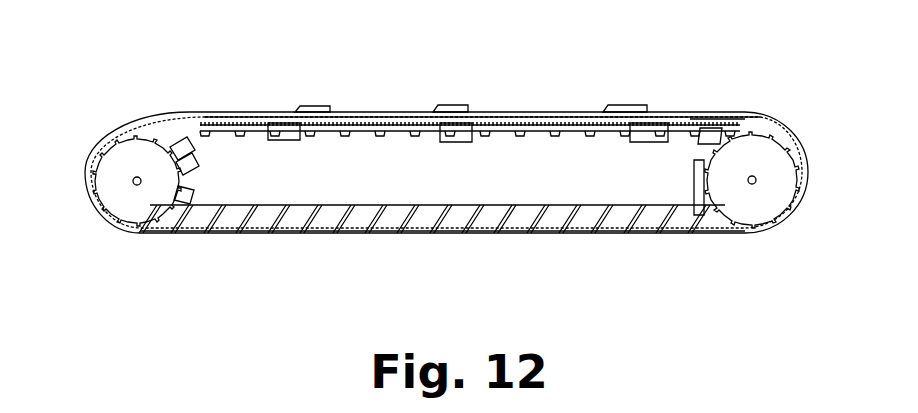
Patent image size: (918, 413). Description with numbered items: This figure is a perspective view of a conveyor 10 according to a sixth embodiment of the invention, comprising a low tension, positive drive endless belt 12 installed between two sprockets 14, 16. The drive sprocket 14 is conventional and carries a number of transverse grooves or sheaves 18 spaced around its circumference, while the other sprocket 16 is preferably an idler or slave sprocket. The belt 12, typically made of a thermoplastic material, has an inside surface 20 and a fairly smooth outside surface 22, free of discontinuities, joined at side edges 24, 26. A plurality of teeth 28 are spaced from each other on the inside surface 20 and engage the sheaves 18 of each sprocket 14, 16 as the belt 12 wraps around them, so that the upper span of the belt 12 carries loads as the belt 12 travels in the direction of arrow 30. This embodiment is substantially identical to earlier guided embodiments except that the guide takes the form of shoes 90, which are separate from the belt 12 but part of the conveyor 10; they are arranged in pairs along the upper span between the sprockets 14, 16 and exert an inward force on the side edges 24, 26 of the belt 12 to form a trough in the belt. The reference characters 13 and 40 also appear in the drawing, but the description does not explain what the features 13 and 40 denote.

The conveyor 10 is at (589, 36).
The endless belt 12 is at (252, 103).
The direction of travel 13 is at (315, 100).
The drive sprocket 14 is at (153, 202).
The idler sprocket 16 is at (768, 203).
The sheaves 18 is at (192, 176).
The inside surface 20 is at (592, 220).
The outside surface 22 is at (583, 117).
The side edge 24 is at (384, 112).
The side edge 26 is at (425, 134).
The teeth 28 is at (357, 222).
The arrow 30 is at (152, 160).
The carryway 40 is at (682, 122).
The shoes 90 is at (305, 100).